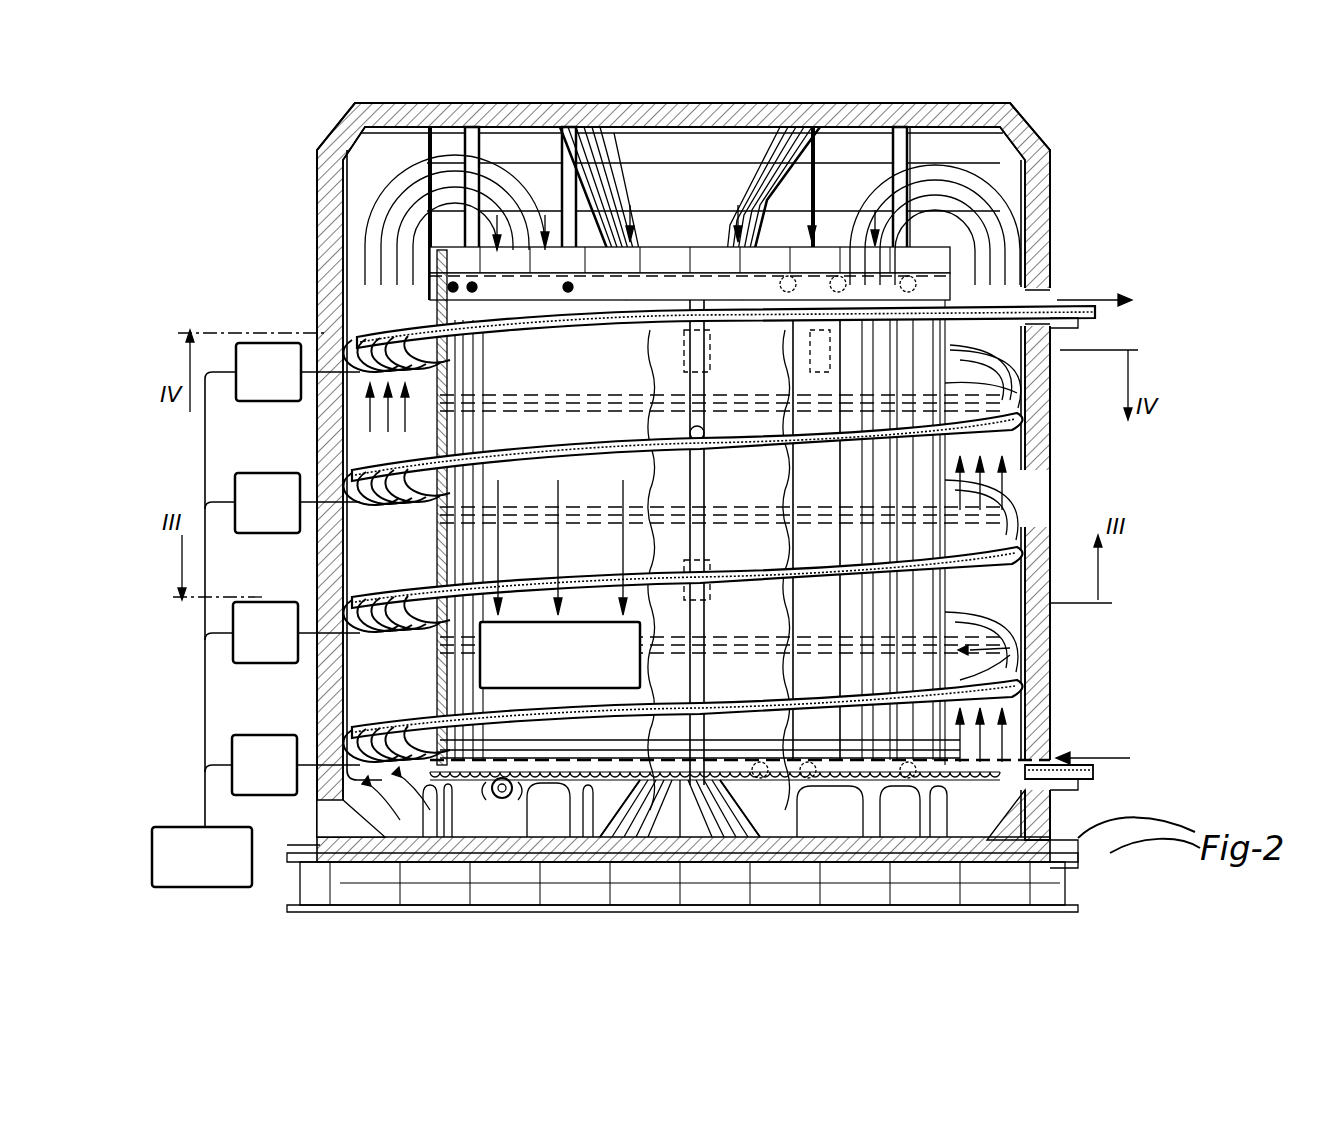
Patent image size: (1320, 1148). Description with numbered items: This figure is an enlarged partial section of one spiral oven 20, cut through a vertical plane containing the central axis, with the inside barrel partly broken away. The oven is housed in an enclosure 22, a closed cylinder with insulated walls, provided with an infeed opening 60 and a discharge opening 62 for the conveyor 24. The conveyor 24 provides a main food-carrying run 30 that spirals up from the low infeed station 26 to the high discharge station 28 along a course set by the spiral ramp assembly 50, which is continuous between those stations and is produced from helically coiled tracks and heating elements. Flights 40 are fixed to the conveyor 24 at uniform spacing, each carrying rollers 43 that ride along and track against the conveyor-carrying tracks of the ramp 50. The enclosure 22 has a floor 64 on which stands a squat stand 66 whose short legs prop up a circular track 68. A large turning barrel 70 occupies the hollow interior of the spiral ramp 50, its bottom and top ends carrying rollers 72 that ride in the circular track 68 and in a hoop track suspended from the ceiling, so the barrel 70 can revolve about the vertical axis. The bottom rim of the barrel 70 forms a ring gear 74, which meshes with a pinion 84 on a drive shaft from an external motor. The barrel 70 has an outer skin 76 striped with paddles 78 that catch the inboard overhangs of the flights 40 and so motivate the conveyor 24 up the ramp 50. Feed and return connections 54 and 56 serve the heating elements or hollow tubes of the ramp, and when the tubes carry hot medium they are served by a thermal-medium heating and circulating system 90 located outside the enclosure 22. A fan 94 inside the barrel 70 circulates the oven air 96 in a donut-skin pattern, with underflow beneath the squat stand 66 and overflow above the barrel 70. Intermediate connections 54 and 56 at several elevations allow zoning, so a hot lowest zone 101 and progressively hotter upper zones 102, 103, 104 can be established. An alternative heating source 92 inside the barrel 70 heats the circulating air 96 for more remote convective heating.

The spiral oven 20 is at (216, 156).
The enclosure 22 is at (1002, 104).
The conveyor 24 is at (723, 522).
The main food-carrying run 30 is at (638, 441).
The infeed station 26 is at (1130, 748).
The discharge station 28 is at (1131, 287).
The flights 40 is at (700, 424).
The rollers 43 is at (696, 431).
The spiral ramp assembly 50 is at (727, 452).
The feed connection 54 is at (365, 505).
The return connection 56 is at (375, 636).
The infeed opening 60 is at (1091, 760).
The discharge opening 62 is at (1076, 296).
The floor 64 is at (541, 860).
The squat stand 66 is at (870, 803).
The circular track 68 is at (720, 762).
The barrel 70 is at (527, 253).
The rollers 72 is at (689, 279).
The ring gear 74 is at (578, 787).
The skin 76 is at (762, 618).
The paddles 78 is at (706, 539).
The pinion 84 is at (495, 802).
The thermal-medium heating and circulating system 90 is at (188, 832).
The heating source 92 is at (560, 655).
The fan 94 is at (756, 762).
The air circulation 96 is at (800, 219).
The lowest zone 101 is at (282, 753).
The zone two 102 is at (295, 672).
The zone three 103 is at (282, 491).
The zone four 104 is at (297, 410).